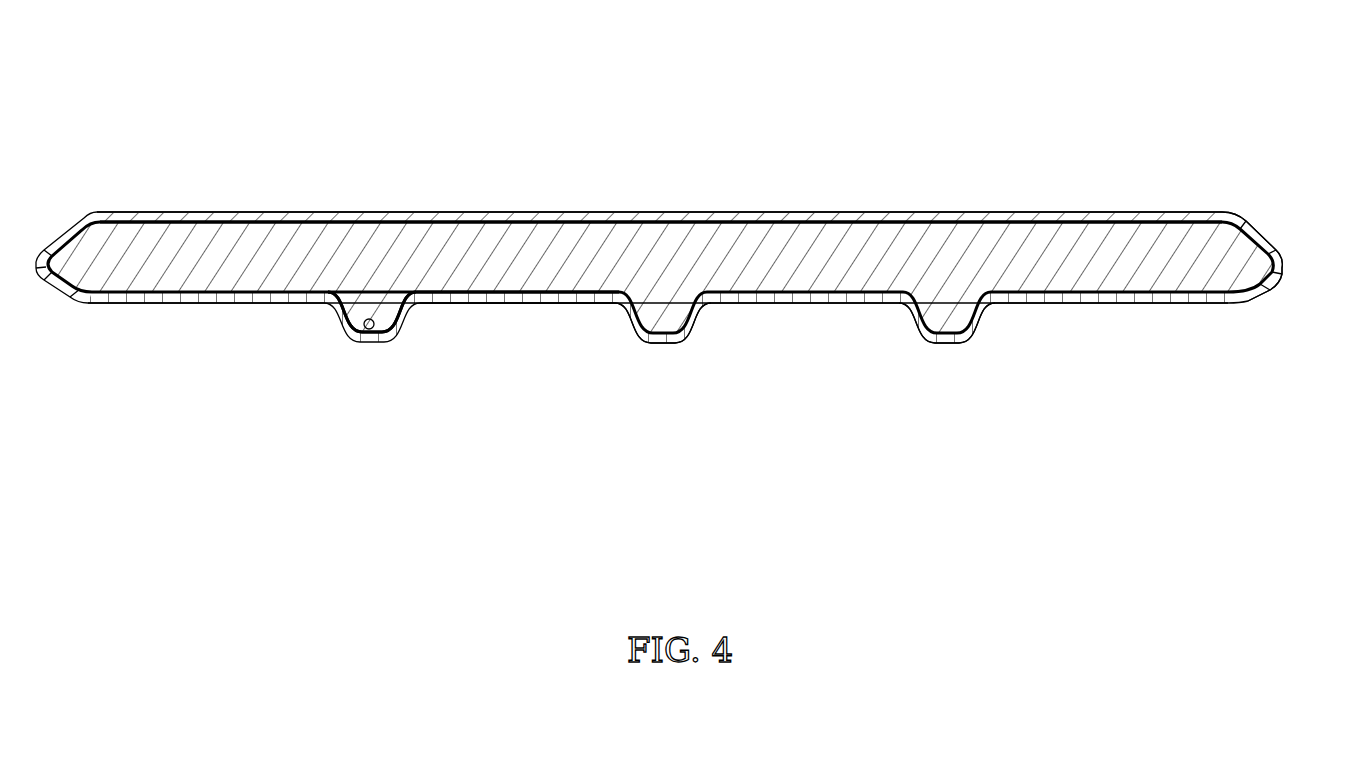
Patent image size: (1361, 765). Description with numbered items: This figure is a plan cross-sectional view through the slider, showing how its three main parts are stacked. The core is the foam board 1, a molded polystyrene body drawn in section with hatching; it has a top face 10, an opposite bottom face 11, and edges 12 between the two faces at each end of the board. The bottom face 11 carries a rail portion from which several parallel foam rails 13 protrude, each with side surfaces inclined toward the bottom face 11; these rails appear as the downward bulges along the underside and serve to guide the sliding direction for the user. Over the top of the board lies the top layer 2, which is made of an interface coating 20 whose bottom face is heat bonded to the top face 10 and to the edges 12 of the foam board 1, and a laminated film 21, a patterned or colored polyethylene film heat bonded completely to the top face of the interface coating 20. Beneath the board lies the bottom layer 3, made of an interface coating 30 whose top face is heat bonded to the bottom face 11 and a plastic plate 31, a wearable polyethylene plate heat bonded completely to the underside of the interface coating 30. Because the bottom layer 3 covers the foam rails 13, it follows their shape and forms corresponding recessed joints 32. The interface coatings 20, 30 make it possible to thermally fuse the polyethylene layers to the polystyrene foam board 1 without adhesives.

The foam board 1 is at (957, 245).
The top layer 2 is at (448, 113).
The bottom layer 3 is at (603, 412).
The top face 10 is at (1108, 222).
The bottom face 11 is at (1177, 300).
The edges 12 is at (1283, 263).
The foam rails 13 is at (663, 313).
The interface coating 20 is at (437, 222).
The laminated film 21 is at (567, 222).
The interface coating 30 is at (475, 294).
The plastic plate 31 is at (577, 298).
The recessed joints 32 is at (367, 320).